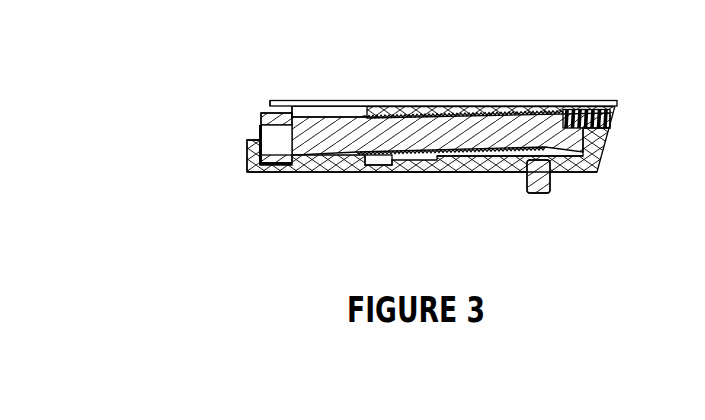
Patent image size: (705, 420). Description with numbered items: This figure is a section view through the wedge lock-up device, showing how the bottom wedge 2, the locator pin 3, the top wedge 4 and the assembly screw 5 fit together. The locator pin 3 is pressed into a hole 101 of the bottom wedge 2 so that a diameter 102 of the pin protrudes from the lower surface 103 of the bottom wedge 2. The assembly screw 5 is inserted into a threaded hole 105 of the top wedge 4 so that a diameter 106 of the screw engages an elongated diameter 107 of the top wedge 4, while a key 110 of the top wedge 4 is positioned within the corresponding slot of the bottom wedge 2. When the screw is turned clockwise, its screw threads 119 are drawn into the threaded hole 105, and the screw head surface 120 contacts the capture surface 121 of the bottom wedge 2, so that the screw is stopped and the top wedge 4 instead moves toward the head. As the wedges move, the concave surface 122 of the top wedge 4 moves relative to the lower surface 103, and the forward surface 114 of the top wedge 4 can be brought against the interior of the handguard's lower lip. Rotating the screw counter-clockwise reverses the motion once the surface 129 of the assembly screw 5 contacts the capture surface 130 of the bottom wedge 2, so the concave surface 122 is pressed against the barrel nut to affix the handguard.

The bottom wedge 2 is at (431, 140).
The locator pin 3 is at (547, 193).
The top wedge 4 is at (377, 86).
The assembly screw 5 is at (260, 132).
The hole 101 is at (553, 172).
The diameter 102 is at (551, 180).
The lower surface 103 is at (507, 173).
The threaded hole 105 is at (612, 120).
The diameter 106 is at (267, 111).
The elongated diameter 107 is at (333, 118).
The key 110 is at (510, 147).
The forward surface 114 is at (270, 91).
The screw threads 119 is at (420, 162).
The screw head surface 120 is at (330, 172).
The capture surface 121 is at (285, 173).
The concave surface 122 is at (443, 100).
The surface 129 is at (258, 140).
The capture surface 130 is at (265, 173).